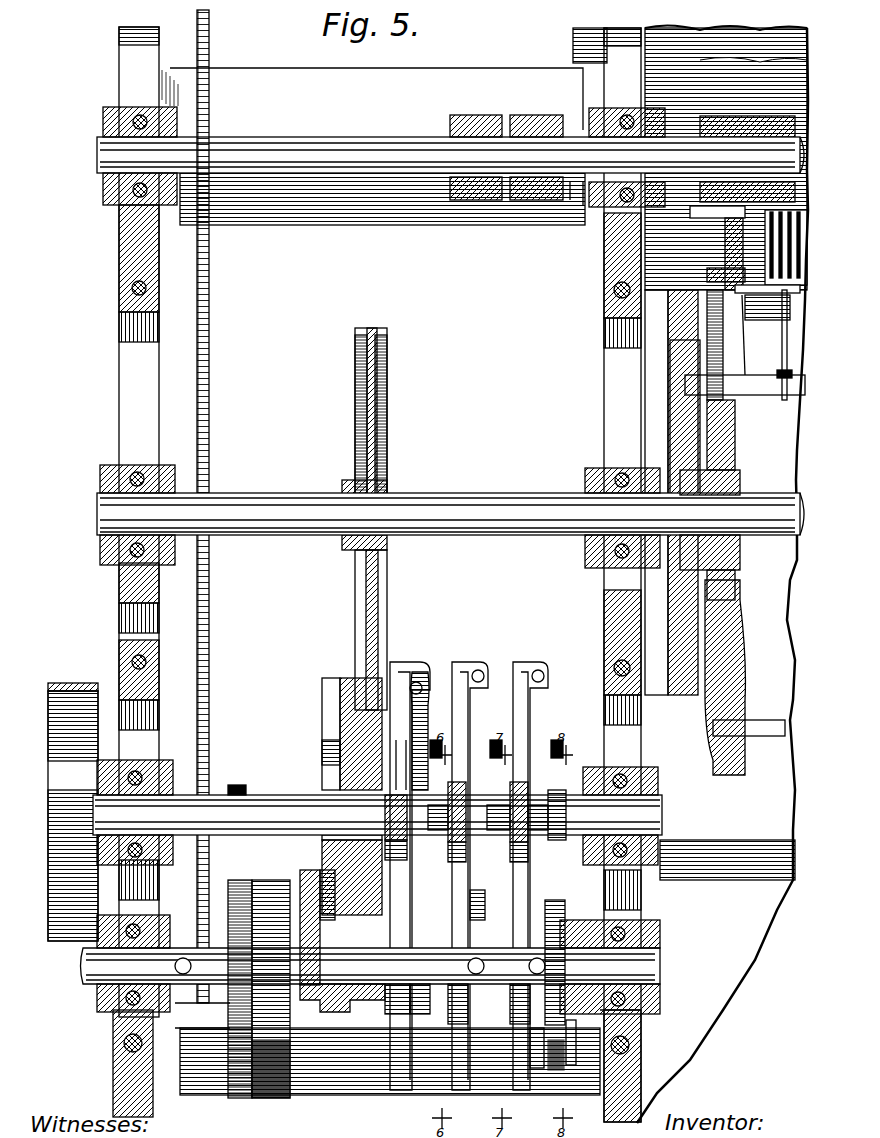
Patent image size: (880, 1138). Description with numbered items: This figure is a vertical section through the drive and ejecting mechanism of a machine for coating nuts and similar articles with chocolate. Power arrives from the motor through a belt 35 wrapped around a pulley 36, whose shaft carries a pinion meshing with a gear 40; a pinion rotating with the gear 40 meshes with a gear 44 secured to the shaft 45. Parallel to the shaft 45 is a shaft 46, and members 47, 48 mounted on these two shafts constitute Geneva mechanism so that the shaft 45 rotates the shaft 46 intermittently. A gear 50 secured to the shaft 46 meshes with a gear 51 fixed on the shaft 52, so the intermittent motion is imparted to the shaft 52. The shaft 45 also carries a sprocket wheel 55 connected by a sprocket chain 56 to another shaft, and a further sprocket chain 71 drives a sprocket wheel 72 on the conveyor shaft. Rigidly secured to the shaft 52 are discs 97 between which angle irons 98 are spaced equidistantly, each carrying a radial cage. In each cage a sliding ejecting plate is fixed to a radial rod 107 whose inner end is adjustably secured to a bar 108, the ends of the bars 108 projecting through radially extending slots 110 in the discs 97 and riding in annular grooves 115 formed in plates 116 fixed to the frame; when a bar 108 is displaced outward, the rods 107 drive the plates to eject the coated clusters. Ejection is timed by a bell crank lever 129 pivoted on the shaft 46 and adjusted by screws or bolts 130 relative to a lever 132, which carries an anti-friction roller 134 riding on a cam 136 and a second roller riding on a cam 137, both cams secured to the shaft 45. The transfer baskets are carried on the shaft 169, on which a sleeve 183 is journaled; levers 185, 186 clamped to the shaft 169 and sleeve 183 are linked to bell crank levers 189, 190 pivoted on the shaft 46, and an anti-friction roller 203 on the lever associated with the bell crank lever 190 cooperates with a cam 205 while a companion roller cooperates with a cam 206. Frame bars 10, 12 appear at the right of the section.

The frame bar 10 is at (785, 240).
The frame bar 12 is at (800, 260).
The belt 35 is at (78, 683).
The pulley 36 is at (60, 728).
The gear 40 is at (230, 1098).
The gear 44 is at (268, 1098).
The shaft 45 is at (83, 966).
The shaft 46 is at (278, 795).
The Geneva mechanism member 47 is at (312, 998).
The Geneva mechanism member 48 is at (322, 708).
The gear 50 is at (340, 724).
The gear 51 is at (388, 432).
The shaft 52 is at (316, 488).
The sprocket wheel 55 is at (636, 1030).
The sprocket chain 56 is at (572, 1068).
The sprocket chain 71 is at (209, 700).
The sprocket wheel 72 is at (210, 48).
The discs 97 is at (735, 776).
The angle irons 98 is at (765, 320).
The rod 107 is at (782, 355).
The bar 108 is at (765, 396).
The radially extending slots 110 is at (710, 320).
The annular grooves 115 is at (645, 365).
The plates 116 is at (670, 394).
The bell crank lever 129 is at (385, 808).
The screws or bolts 130 is at (402, 665).
The lever 132 is at (434, 680).
The anti-friction roller 134 is at (400, 1000).
The cam 136 is at (430, 1000).
The cam 137 is at (385, 1000).
The shaft 169 is at (410, 155).
The sleeve 183 is at (572, 205).
The lever 185 is at (470, 115).
The lever 186 is at (535, 115).
The bell crank lever 189 is at (458, 840).
The bell crank lever 190 is at (520, 825).
The anti-friction roller 203 is at (518, 880).
The cam 205 is at (542, 1085).
The cam 206 is at (540, 1072).